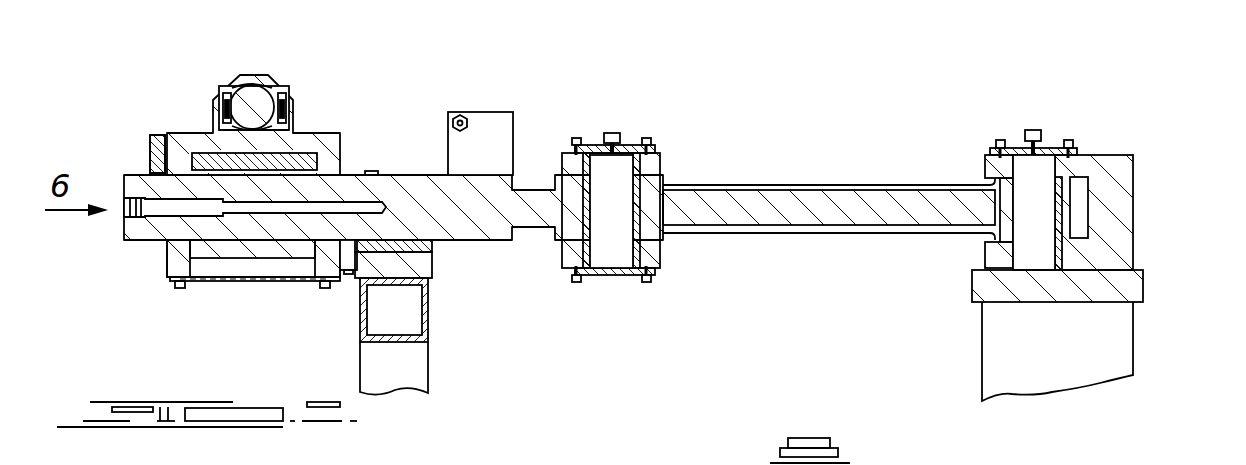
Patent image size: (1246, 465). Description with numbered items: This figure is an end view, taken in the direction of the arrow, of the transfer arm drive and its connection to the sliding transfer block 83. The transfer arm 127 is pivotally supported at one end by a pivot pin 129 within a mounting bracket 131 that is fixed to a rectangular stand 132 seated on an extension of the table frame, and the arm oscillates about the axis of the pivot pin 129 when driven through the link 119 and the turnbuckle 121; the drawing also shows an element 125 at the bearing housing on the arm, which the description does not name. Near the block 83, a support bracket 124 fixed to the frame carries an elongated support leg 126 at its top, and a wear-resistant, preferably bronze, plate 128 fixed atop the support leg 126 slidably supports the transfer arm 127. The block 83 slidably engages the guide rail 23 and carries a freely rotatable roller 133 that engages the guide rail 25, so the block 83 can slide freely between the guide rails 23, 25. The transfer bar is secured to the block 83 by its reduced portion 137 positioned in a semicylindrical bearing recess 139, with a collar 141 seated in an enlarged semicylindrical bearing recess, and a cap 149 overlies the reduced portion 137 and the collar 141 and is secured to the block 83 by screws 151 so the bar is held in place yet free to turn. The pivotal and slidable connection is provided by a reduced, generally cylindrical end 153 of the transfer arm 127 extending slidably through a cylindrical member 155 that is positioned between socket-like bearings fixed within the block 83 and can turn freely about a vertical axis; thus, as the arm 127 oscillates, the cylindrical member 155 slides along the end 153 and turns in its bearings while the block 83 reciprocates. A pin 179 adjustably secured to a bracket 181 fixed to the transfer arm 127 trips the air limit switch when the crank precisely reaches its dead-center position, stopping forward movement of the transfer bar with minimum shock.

The guide rail 23 is at (348, 274).
The guide rail 25 is at (148, 150).
The sliding transfer block 83 is at (336, 135).
The link 119 is at (918, 464).
The turnbuckle 121 is at (1062, 464).
The support bracket 124 is at (418, 373).
The bearing assembly 125 is at (623, 192).
The support leg 126 is at (420, 271).
The transfer arm 127 is at (797, 192).
The wear-resistant plate 128 is at (432, 246).
The pivot pin 129 is at (1040, 170).
The mounting bracket 131 is at (1105, 157).
The rectangular stand 132 is at (1118, 338).
The roller 133 is at (150, 142).
The reduced portion 137 is at (282, 86).
The semicylindrical bearing recess 139 is at (296, 121).
The collar 141 is at (207, 130).
The cap 149 is at (254, 85).
The screw 151 is at (221, 102).
The cylindrical end 153 is at (150, 234).
The cylindrical member 155 is at (308, 166).
The pin 179 is at (464, 118).
The bracket 181 is at (500, 133).